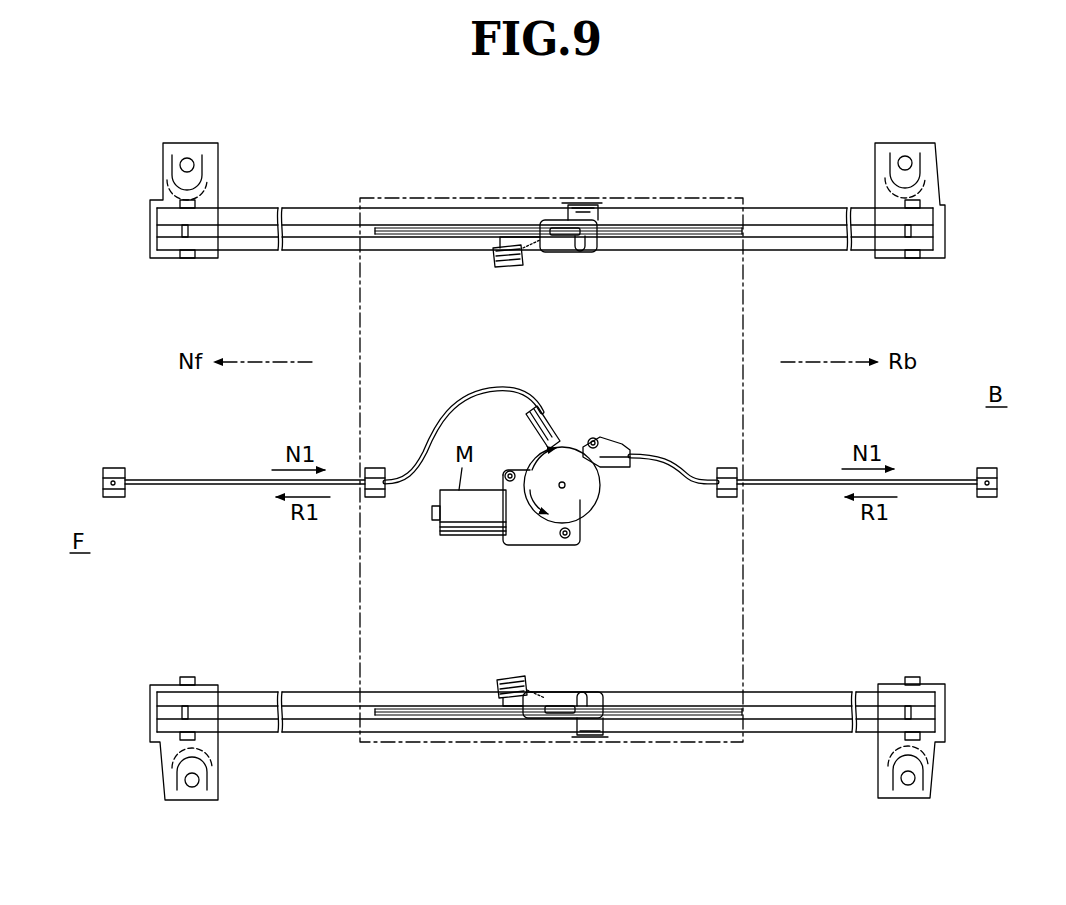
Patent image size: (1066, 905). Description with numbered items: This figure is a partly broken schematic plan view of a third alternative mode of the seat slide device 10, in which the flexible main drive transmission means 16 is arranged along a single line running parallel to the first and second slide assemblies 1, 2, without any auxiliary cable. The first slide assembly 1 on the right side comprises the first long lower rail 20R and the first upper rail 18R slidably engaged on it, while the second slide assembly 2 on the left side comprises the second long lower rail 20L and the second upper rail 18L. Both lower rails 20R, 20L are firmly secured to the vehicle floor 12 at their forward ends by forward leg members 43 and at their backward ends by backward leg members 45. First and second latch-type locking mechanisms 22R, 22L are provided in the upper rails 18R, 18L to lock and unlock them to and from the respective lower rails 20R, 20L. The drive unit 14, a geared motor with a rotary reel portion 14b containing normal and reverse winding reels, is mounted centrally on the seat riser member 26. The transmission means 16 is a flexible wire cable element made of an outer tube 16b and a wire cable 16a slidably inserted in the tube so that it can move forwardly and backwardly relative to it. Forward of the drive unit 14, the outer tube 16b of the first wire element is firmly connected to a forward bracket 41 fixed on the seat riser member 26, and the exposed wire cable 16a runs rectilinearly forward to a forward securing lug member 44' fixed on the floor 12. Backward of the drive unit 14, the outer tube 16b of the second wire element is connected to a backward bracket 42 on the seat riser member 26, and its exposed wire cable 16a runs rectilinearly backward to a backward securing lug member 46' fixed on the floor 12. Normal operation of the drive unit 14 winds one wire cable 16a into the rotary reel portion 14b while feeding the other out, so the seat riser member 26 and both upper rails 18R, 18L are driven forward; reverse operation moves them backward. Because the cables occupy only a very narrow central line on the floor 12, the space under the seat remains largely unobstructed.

The first slide assembly 1 is at (790, 132).
The second slide assembly 2 is at (865, 660).
The seat slide device 10 is at (993, 294).
The vehicle floor 12 is at (103, 399).
The drive unit 14 is at (503, 561).
The rotary reel portion 14b is at (577, 441).
The flexible main drive transmission means 16 is at (498, 386).
The wire cable 16a is at (205, 486).
The outer tube 16b is at (408, 490).
The first upper rail 18R is at (636, 231).
The second upper rail 18L is at (635, 720).
The first long lower rail 20R is at (307, 206).
The second long lower rail 20L is at (300, 688).
The first latch-type locking mechanism 22R is at (548, 218).
The second latch-type locking mechanism 22L is at (553, 723).
The seat riser member 26 is at (748, 391).
The forward bracket 41 is at (381, 466).
The backward bracket 42 is at (727, 466).
The forward leg member 43 is at (164, 190).
The forward securing lug member 44' is at (130, 458).
The backward leg member 45 is at (877, 190).
The backward securing lug member 46' is at (1009, 460).